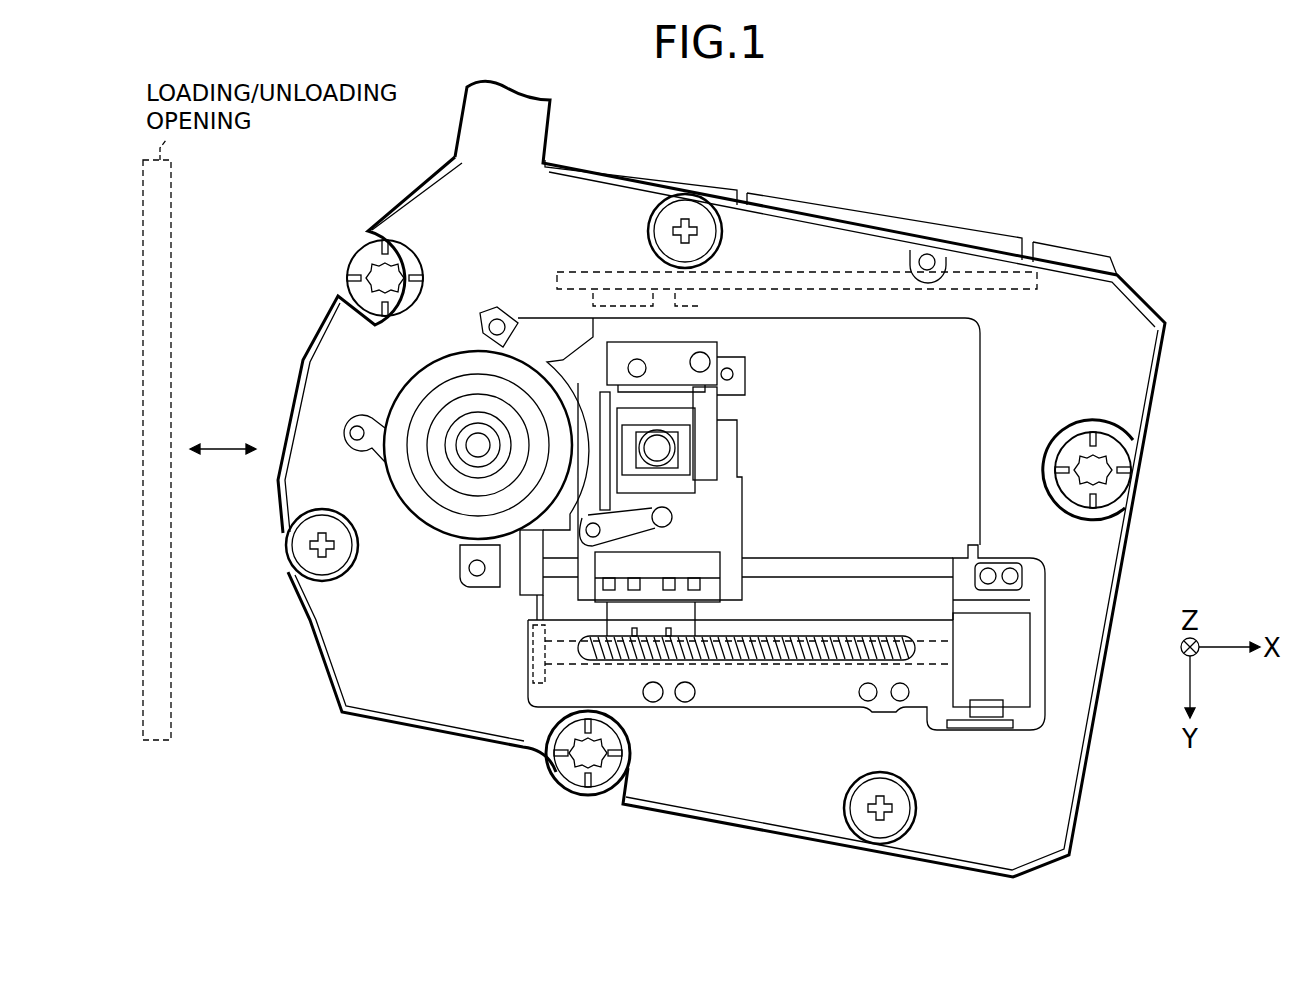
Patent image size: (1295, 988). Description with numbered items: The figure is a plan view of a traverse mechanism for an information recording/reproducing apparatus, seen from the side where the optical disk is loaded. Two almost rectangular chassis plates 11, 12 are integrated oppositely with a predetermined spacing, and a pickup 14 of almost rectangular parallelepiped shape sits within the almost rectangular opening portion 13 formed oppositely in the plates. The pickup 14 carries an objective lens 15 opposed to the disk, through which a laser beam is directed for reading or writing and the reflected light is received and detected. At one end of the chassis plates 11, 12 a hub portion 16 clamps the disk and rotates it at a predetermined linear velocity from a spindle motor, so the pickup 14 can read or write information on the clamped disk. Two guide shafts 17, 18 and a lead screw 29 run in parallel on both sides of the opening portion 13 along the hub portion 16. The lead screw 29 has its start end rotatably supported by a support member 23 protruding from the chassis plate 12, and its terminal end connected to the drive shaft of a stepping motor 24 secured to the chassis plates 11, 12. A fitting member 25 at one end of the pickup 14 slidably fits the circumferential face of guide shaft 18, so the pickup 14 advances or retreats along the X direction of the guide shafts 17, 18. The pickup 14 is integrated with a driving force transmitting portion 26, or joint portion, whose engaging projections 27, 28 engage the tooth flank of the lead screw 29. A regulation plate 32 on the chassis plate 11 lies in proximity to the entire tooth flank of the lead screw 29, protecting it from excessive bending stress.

The chassis plate 11 is at (735, 479).
The chassis plate 12 is at (998, 232).
The opening portion 13 is at (977, 378).
The pickup 14 is at (692, 489).
The objective lens 15 is at (658, 450).
The hub portion 16 is at (467, 424).
The guide shaft 17 is at (875, 565).
The guide shaft 18 is at (758, 278).
The support member 23 is at (537, 665).
The stepping motor 24 is at (1018, 655).
The fitting member 25 is at (660, 290).
The driving force transmitting portion 26 is at (700, 593).
The engaging projection 27 is at (634, 648).
The engaging projection 28 is at (668, 648).
The lead screw 29 is at (765, 664).
The regulation plate 32 is at (835, 693).